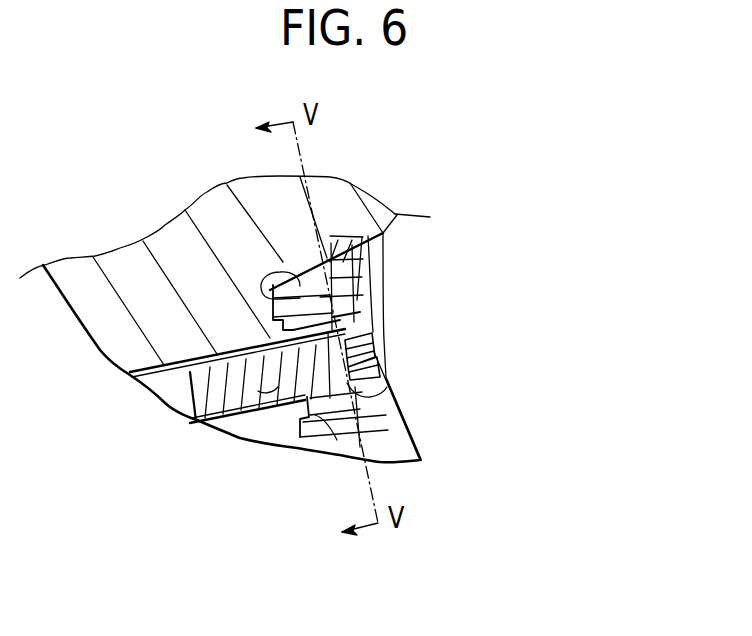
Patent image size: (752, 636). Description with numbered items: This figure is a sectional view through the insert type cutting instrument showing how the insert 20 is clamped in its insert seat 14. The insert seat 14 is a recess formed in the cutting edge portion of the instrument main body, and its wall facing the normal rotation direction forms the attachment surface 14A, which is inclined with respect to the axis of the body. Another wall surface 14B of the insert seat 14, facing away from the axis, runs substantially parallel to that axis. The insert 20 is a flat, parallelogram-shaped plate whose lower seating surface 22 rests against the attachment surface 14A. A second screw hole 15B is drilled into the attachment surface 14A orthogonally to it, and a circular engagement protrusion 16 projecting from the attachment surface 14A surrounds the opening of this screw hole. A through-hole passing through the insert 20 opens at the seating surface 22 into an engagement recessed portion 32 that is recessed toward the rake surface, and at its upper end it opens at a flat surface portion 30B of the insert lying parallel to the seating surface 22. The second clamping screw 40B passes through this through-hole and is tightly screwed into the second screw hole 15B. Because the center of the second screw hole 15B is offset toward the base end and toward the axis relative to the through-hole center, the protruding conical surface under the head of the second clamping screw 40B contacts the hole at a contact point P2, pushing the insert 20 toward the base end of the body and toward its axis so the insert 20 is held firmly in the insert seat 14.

The insert seat 14 is at (448, 176).
The attachment surface 14A is at (280, 252).
The wall surface 14B is at (363, 280).
The second screw hole 15B is at (162, 397).
The circular engagement protrusion 16 is at (339, 440).
The insert 20 is at (427, 458).
The seating surface 22 is at (300, 444).
The toothed block 30B is at (385, 367).
The engagement recessed portion 32 is at (265, 335).
The second clamping screw 40B is at (267, 392).
The contact point P2 is at (372, 325).